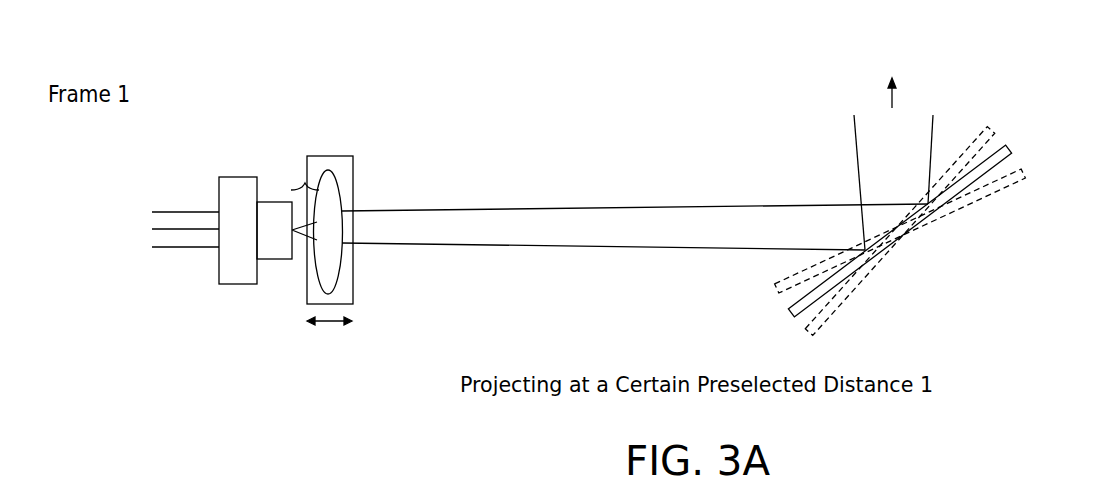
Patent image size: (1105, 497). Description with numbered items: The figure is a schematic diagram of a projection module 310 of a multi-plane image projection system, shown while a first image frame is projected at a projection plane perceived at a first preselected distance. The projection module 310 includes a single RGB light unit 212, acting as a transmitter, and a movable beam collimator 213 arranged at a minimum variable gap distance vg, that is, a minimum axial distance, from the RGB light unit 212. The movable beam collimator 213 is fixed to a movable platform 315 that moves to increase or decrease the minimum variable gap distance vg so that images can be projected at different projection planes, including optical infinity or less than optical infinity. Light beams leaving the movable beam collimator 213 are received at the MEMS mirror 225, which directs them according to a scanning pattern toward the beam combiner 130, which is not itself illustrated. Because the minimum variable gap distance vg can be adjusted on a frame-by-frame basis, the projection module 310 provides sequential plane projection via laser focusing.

The projection module 310 is at (180, 77).
The RGB light unit 212 is at (238, 177).
The movable beam collimator 213 is at (328, 170).
The movable platform 315 is at (353, 282).
The minimum variable gap distance vg is at (305, 185).
The beam combiner 130 is at (1005, 60).
The MEMS mirror 225 is at (1010, 152).